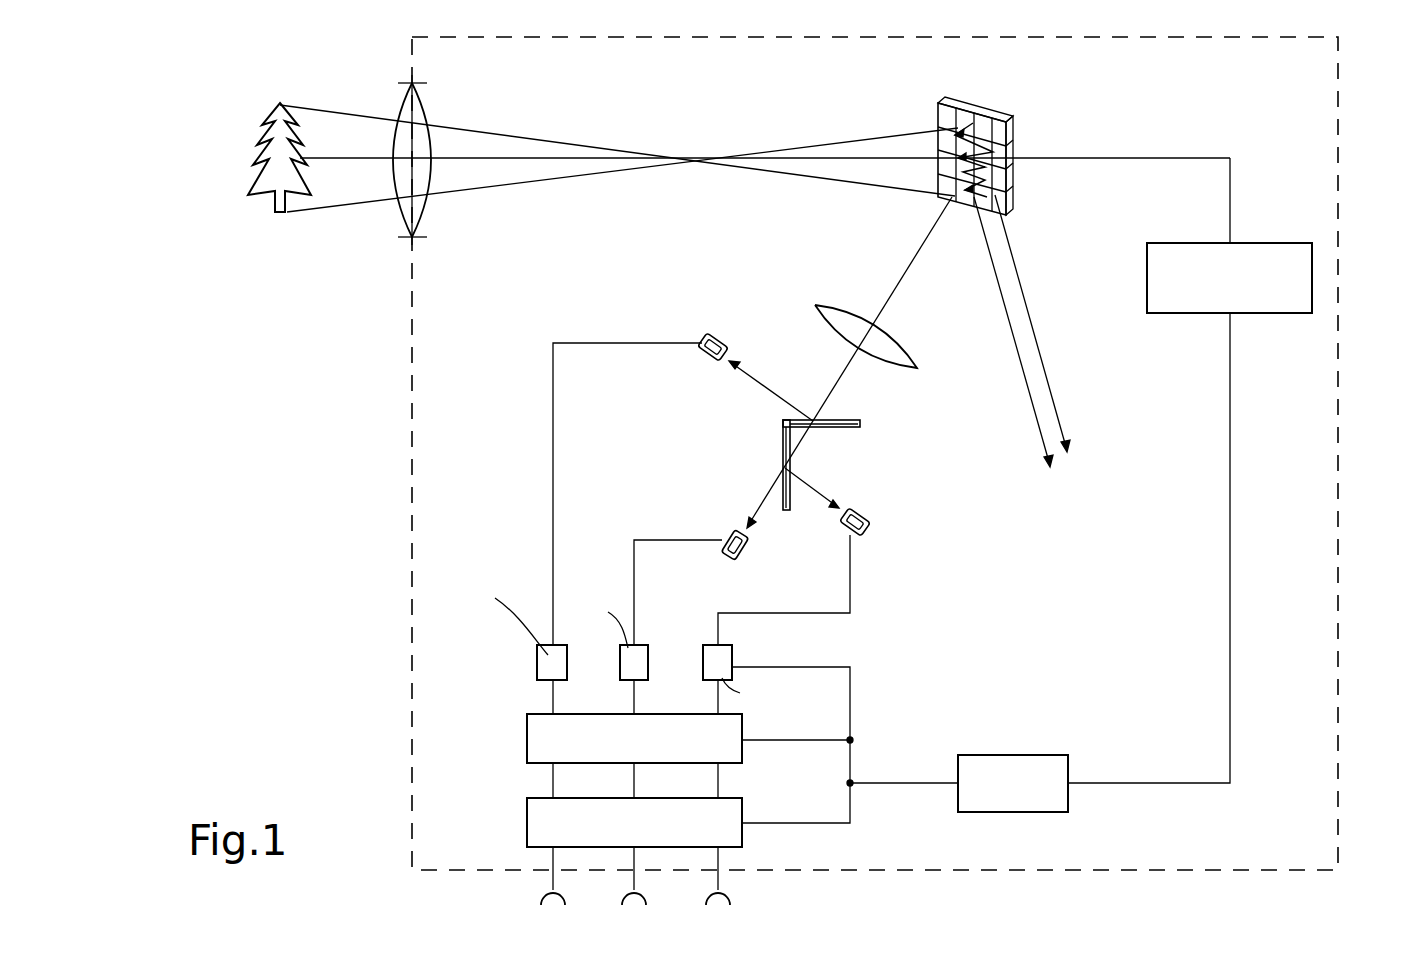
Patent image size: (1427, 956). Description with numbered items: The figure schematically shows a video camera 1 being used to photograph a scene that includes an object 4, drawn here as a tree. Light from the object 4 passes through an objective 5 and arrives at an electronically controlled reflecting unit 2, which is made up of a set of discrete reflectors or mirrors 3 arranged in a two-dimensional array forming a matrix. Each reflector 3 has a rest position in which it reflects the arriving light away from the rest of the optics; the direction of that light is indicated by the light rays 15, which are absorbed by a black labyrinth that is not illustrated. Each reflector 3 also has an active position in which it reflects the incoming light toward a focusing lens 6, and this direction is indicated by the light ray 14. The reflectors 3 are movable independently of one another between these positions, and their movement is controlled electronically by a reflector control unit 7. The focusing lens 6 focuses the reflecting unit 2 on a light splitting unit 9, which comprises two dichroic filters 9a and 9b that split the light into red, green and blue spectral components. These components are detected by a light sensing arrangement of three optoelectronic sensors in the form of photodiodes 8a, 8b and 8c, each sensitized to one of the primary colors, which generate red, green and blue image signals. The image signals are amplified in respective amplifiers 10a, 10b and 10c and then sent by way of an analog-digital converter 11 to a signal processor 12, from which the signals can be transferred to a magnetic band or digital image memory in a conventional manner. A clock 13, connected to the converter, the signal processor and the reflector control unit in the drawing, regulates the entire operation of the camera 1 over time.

The video camera 1 is at (1362, 416).
The electronically controlled reflecting unit 2 is at (1008, 141).
The reflectors 3 is at (1005, 140).
The object 4 is at (260, 183).
The objective 5 is at (407, 105).
The focusing lens 6 is at (915, 352).
The reflector control unit 7 is at (1207, 312).
The photodiode 8a is at (866, 537).
The photodiode 8b is at (745, 557).
The photodiode 8c is at (720, 330).
The light splitting unit 9 is at (807, 492).
The dichroic filter 9a is at (848, 428).
The dichroic filter 9b is at (792, 508).
The amplifier 10a is at (735, 655).
The amplifier 10b is at (640, 645).
The amplifier 10c is at (537, 666).
The analog-digital converter 11 is at (527, 739).
The signal processor 12 is at (527, 823).
The clock 13 is at (985, 755).
The light ray 14 is at (900, 285).
The light rays 15 is at (1017, 273).